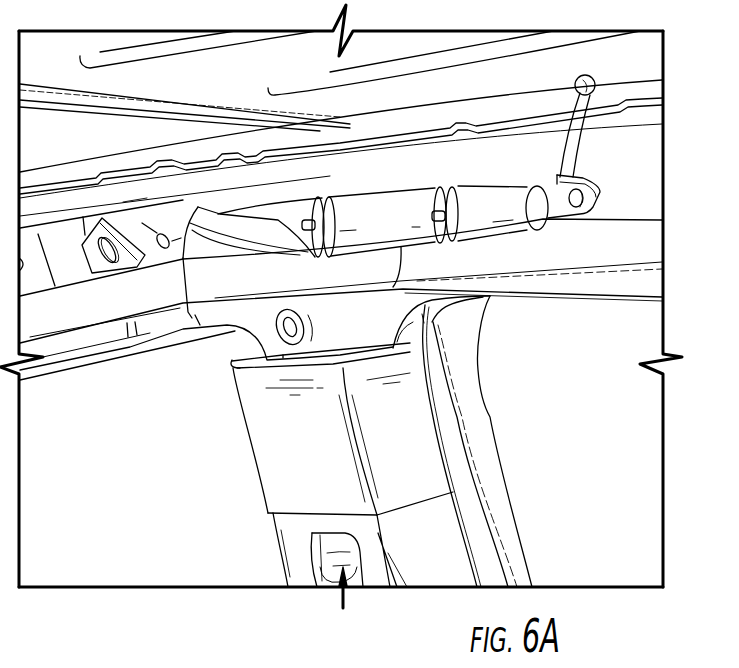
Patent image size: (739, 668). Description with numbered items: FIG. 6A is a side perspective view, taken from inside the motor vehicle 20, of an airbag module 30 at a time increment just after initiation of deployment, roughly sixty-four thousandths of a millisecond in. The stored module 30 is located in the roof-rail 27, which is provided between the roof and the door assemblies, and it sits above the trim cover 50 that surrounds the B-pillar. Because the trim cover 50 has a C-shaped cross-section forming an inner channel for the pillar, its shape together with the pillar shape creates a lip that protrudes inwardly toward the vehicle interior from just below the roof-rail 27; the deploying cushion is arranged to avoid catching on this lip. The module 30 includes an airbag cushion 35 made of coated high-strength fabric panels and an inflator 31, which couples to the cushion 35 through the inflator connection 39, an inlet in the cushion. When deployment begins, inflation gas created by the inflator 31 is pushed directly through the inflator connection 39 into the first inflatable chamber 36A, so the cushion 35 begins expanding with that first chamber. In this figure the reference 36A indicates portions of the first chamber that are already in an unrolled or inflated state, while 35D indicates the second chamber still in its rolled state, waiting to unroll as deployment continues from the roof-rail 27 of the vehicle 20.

The motor vehicle 20 is at (613, 589).
The roof-rail 27 is at (70, 248).
The airbag module 30 is at (593, 167).
The inflator 31 is at (490, 202).
The airbag cushion 35 is at (625, 230).
The second chamber in rolled state 35D is at (225, 223).
The first inflatable chamber 36A is at (284, 212).
The inflator connection 39 is at (418, 200).
The trim cover 50 is at (430, 553).